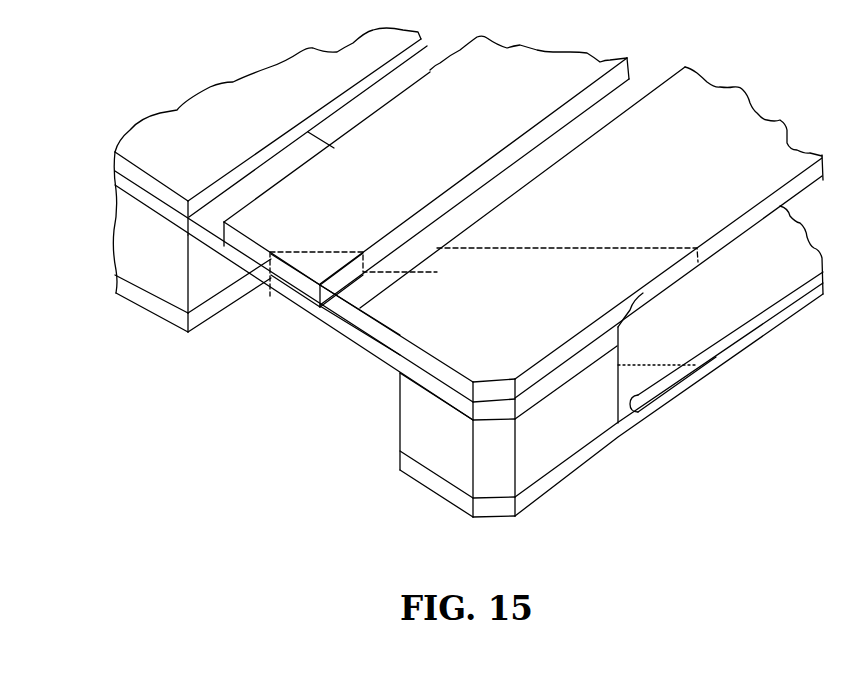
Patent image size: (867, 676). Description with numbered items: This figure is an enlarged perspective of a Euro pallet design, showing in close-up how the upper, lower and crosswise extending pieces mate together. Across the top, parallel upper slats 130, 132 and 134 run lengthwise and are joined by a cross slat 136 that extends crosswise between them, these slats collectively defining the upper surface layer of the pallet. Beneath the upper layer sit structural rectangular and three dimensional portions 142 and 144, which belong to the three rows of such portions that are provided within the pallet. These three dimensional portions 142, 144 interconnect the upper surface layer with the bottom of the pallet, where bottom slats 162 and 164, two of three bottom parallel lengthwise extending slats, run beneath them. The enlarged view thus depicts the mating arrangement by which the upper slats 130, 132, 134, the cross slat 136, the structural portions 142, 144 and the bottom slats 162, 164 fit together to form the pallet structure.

The upper slat 130 is at (113, 172).
The upper slat 132 is at (307, 290).
The upper slat 134 is at (403, 330).
The cross slat 136 is at (332, 330).
The structural rectangular and three dimensional portion 142 is at (407, 440).
The structural rectangular and three dimensional portion 144 is at (162, 293).
The bottom slat 162 is at (204, 330).
The bottom slat 164 is at (452, 496).